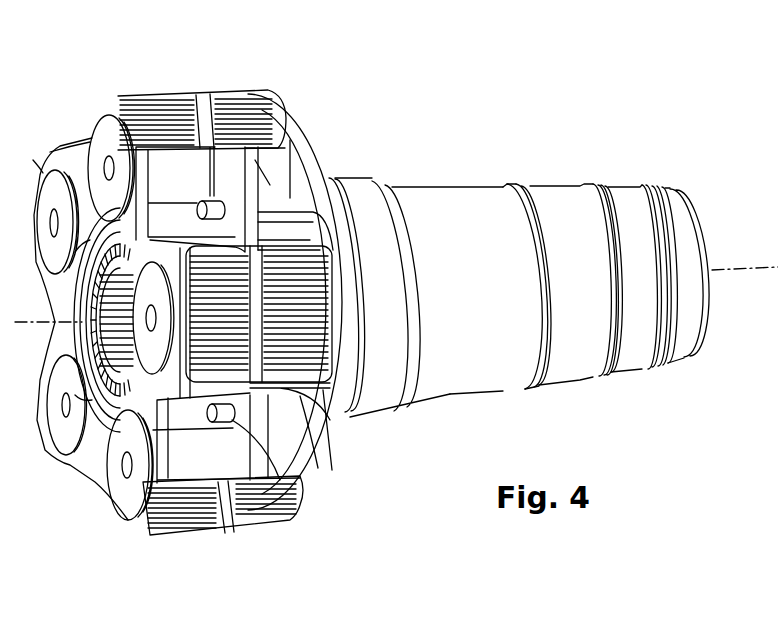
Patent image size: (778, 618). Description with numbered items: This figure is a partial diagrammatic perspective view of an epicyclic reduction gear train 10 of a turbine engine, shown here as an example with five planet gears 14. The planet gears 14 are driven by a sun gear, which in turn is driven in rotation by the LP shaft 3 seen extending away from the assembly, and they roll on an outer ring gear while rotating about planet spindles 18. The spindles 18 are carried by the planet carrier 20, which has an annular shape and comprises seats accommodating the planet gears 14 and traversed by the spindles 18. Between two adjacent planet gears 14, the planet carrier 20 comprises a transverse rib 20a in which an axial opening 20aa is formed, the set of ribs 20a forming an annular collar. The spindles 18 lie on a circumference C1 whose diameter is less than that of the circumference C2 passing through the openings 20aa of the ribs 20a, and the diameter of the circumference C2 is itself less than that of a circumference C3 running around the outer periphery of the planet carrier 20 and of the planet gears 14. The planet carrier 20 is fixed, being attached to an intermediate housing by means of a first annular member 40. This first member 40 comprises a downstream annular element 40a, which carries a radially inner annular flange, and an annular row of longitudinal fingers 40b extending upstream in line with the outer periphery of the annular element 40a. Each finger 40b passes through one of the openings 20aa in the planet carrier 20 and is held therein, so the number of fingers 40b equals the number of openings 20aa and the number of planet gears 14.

The epicyclic reduction gear train 10 is at (594, 104).
The LP shaft 3 is at (450, 205).
The planet gears 14 is at (213, 92).
The planet spindles 18 is at (100, 138).
The planet carrier 20 is at (280, 153).
The transverse rib 20a is at (252, 462).
The axial opening 20aa is at (296, 490).
The first annular member 40 is at (373, 300).
The downstream annular element 40a is at (337, 230).
The longitudinal fingers 40b is at (297, 202).
The circumference C1 is at (95, 467).
The circumference C2 is at (190, 172).
The circumference C3 is at (277, 173).